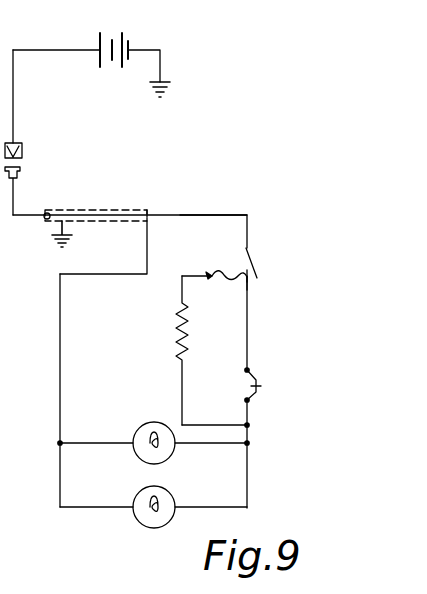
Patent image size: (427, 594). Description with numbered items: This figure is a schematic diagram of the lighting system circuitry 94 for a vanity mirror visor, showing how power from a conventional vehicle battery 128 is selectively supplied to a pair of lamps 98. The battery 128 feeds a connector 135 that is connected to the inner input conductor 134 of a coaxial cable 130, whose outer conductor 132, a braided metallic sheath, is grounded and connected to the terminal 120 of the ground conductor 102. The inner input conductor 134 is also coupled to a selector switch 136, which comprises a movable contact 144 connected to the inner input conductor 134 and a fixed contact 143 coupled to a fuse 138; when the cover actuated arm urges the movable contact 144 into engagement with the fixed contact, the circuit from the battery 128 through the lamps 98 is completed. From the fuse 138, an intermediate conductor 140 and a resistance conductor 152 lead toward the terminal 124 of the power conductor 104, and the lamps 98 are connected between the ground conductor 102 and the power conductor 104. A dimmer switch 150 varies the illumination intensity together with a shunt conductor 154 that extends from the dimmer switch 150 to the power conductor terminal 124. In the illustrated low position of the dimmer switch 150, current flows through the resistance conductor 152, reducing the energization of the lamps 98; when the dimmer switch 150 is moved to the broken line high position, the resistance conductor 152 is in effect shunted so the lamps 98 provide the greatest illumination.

The circuitry 94 is at (226, 216).
The lamps 98 is at (140, 494).
The ground conductor 102 is at (58, 461).
The power conductor 104 is at (249, 480).
The terminal 120 is at (146, 223).
The terminal 124 is at (250, 428).
The vehicle battery 128 is at (137, 28).
The coaxial cable 130 is at (85, 210).
The outer conductor 132 is at (139, 209).
The inner input conductor 134 is at (47, 219).
The connector 135 is at (22, 153).
The selector switch 136 is at (252, 262).
The fuse 138 is at (212, 268).
The intermediate conductor 140 is at (248, 338).
The fixed contact 143 is at (252, 280).
The movable contact 144 is at (256, 268).
The dimmer switch 150 is at (254, 376).
The resistance conductor 152 is at (176, 321).
The shunt conductor 154 is at (250, 409).